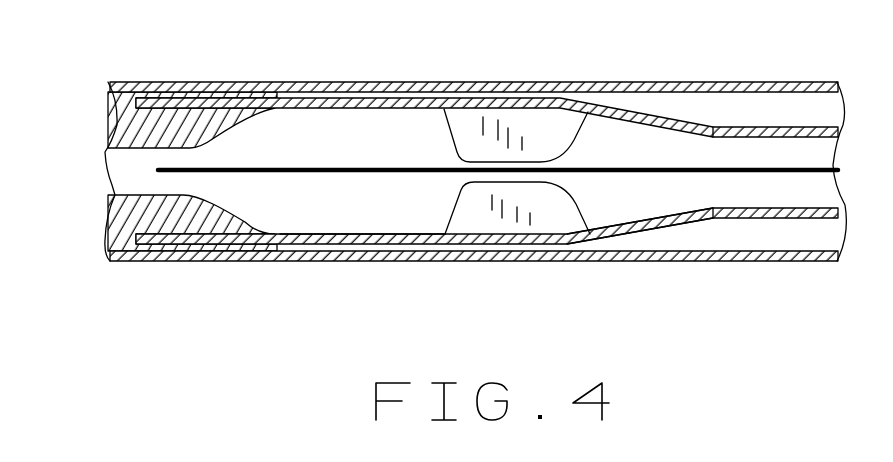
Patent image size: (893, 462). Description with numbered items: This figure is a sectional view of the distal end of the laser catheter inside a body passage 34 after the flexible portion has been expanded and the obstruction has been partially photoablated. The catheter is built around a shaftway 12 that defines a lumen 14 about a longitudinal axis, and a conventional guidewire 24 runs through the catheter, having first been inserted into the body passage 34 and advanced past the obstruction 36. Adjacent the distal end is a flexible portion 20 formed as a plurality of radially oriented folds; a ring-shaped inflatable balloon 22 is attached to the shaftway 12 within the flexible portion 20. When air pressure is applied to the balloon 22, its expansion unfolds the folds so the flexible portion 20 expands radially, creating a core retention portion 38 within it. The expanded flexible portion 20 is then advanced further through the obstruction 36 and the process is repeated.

The shaftway 12 is at (748, 218).
The lumen 14 is at (312, 208).
The flexible portion 20 is at (333, 100).
The inflatable balloon 22 is at (527, 125).
The guidewire 24 is at (443, 168).
The body passage 34 is at (700, 233).
The obstruction 36 is at (143, 218).
The core retention portion 38 is at (387, 234).